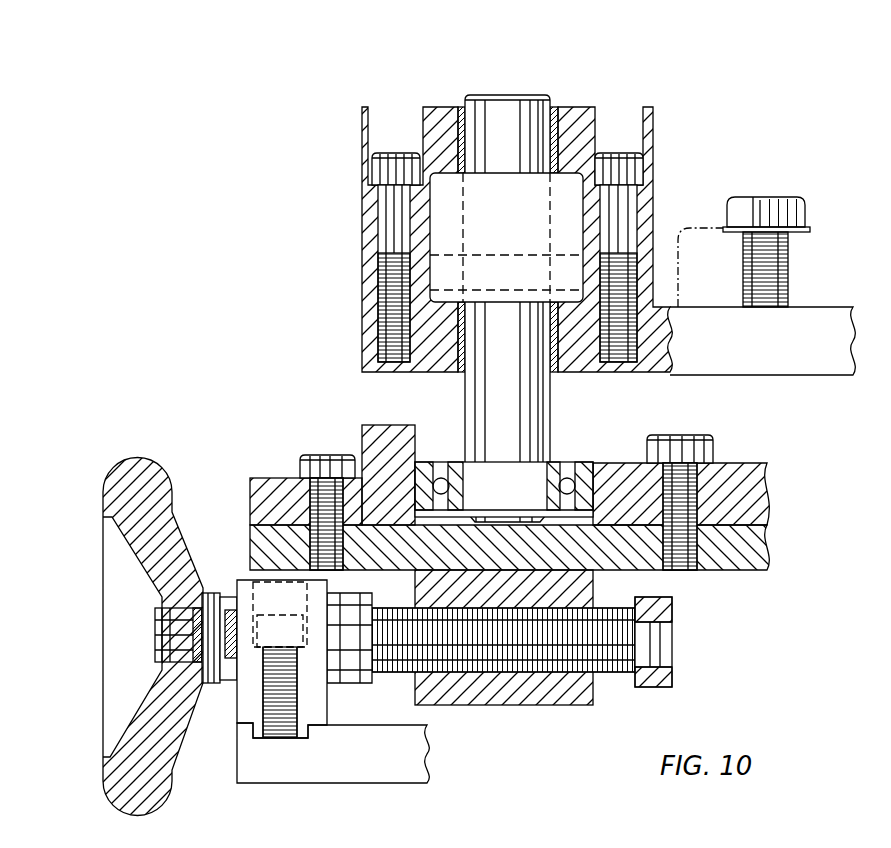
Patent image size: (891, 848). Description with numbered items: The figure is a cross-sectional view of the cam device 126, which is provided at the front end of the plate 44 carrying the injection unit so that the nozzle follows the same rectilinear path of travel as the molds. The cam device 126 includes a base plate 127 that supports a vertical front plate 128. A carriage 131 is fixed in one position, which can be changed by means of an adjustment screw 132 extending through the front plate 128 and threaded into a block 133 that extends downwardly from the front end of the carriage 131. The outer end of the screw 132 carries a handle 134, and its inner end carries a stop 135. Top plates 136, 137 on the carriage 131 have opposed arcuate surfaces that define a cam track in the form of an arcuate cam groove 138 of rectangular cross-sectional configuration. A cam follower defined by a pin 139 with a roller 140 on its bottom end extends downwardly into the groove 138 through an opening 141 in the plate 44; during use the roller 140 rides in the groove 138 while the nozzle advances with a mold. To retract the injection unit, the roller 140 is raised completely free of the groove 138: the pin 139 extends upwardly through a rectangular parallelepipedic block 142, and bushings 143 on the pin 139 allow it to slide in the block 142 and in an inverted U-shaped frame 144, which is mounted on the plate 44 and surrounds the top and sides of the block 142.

The plate 44 is at (710, 375).
The cam device 126 is at (350, 402).
The base plate 127 is at (428, 738).
The front plate 128 is at (315, 710).
The carriage 131 is at (752, 550).
The adjustment screw 132 is at (162, 633).
The block 133 is at (575, 705).
The handle 134 is at (103, 489).
The stop 135 is at (672, 610).
The top plate 136 is at (253, 493).
The top plate 137 is at (737, 467).
The arcuate cam groove 138 is at (415, 432).
The pin 139 is at (546, 400).
The roller 140 is at (587, 462).
The opening 141 is at (428, 371).
The rectangular parallelepipedic block 142 is at (570, 212).
The bushings 143 is at (557, 123).
The inverted U-shaped frame 144 is at (370, 220).